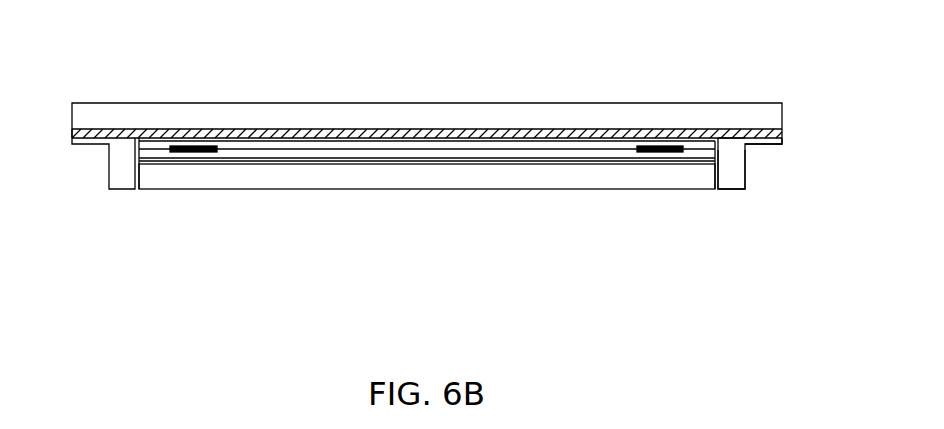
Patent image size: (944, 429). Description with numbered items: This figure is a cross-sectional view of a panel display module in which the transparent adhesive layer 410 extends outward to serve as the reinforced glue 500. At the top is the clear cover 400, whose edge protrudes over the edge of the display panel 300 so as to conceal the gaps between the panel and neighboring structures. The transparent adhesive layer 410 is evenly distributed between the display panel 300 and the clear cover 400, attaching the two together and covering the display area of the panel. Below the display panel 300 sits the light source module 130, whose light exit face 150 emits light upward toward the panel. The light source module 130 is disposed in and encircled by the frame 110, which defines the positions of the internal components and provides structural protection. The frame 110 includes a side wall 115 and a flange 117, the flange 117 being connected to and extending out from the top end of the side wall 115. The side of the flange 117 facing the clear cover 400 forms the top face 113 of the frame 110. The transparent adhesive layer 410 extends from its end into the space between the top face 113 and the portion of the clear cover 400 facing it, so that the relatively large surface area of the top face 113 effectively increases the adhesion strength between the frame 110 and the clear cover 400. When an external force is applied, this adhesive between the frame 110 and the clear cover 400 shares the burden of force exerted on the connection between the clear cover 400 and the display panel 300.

The clear cover 400 is at (577, 118).
The transparent adhesive layer 410 is at (470, 137).
The display panel 300 is at (257, 141).
The light exit face 150 is at (330, 164).
The light source module 130 is at (413, 180).
The frame 110 is at (802, 212).
The top face 113 is at (731, 138).
The side wall 115 is at (729, 182).
The flange 117 is at (763, 143).
The reinforced glue 500 is at (80, 133).